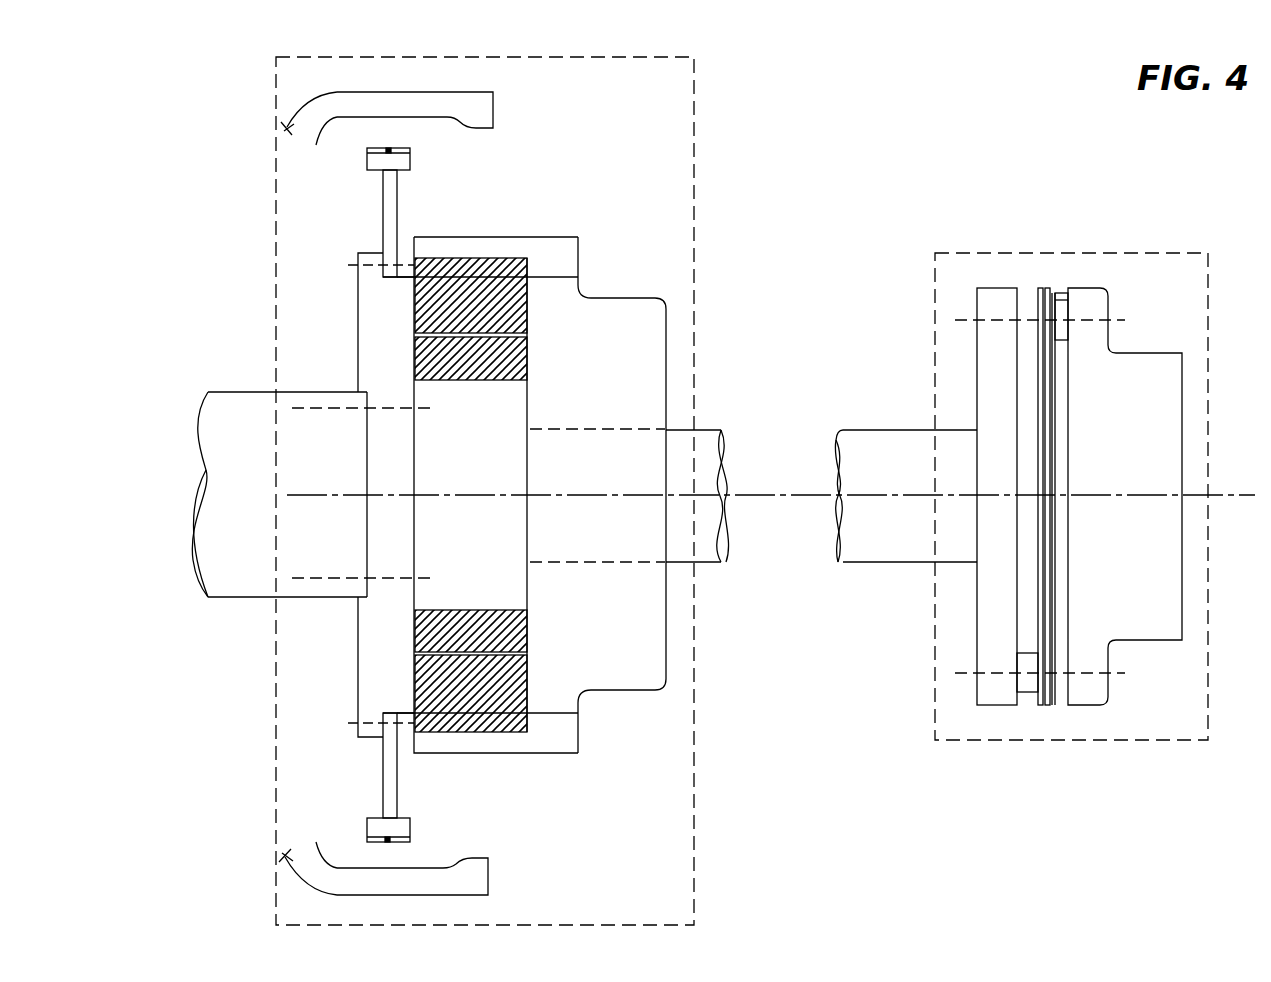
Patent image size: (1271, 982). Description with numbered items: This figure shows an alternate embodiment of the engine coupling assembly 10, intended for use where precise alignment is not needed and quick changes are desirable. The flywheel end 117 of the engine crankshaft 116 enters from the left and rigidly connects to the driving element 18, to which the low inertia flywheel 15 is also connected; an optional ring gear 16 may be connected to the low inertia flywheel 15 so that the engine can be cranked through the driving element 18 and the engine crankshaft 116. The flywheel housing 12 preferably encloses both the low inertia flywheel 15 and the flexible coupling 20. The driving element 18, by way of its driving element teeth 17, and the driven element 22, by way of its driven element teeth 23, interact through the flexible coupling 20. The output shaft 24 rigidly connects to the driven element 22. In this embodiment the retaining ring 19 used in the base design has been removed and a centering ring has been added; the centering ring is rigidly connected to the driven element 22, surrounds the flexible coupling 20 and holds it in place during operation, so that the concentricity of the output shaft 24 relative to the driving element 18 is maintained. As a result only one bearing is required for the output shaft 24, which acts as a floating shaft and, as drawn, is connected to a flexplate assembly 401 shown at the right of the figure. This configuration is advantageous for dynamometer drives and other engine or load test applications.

The engine coupling assembly 10 is at (697, 106).
The flywheel housing 12 is at (447, 93).
The low inertia flywheel 15 is at (397, 217).
The ring gear 16 is at (400, 148).
The driving element teeth 17 is at (418, 323).
The driving element 18 is at (356, 660).
The retaining ring 19 is at (513, 237).
The flexible coupling 20 is at (482, 732).
The driven element 22 is at (632, 689).
The driven element teeth 23 is at (467, 381).
The output shaft 24 is at (714, 430).
The engine crankshaft 116 is at (204, 406).
The flywheel end 117 is at (300, 391).
The flexplate assembly 401 is at (1072, 254).